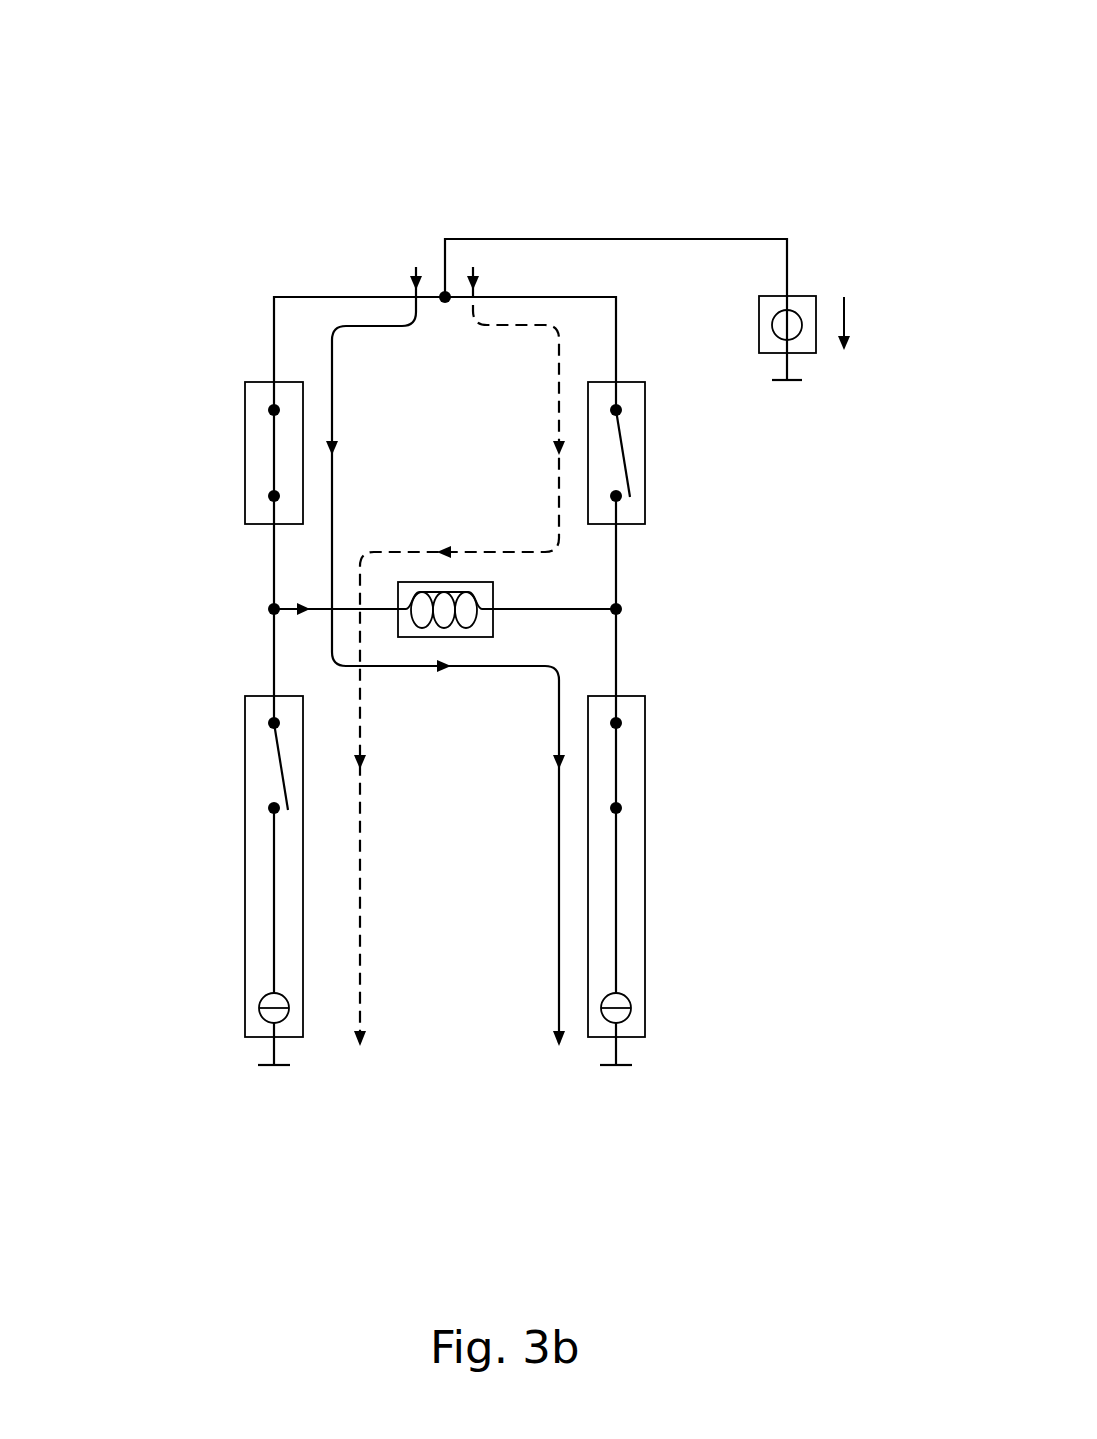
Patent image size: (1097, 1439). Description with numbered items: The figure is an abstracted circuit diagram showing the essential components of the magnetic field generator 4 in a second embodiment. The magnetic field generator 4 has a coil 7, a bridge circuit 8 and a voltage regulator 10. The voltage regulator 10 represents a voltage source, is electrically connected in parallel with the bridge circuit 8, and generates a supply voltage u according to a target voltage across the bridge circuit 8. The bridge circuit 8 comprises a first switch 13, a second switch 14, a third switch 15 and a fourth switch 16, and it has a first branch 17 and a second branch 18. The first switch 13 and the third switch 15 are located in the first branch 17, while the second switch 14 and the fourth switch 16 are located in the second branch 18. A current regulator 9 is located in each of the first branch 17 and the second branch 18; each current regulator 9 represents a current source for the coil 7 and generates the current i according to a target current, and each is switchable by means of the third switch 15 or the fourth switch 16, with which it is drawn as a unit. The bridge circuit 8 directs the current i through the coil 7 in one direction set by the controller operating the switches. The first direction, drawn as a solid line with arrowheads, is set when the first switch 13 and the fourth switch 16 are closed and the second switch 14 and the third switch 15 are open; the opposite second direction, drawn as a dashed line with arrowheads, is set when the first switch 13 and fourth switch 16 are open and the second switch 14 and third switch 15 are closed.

The magnetic field generator 4 is at (727, 78).
The coil 7 is at (493, 592).
The bridge circuit 8 is at (223, 248).
The current regulator 9 is at (260, 1012).
The voltage regulator 10 is at (806, 296).
The first switch 13 is at (245, 398).
The second switch 14 is at (645, 455).
The third switch 15 is at (277, 767).
The fourth switch 16 is at (616, 765).
The first branch 17 is at (232, 1104).
The second branch 18 is at (654, 1104).